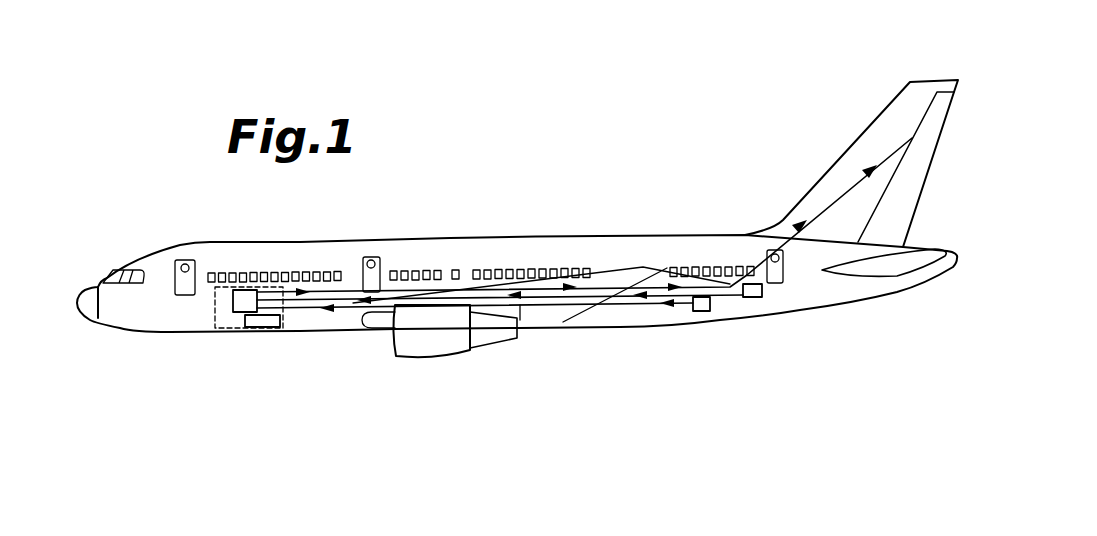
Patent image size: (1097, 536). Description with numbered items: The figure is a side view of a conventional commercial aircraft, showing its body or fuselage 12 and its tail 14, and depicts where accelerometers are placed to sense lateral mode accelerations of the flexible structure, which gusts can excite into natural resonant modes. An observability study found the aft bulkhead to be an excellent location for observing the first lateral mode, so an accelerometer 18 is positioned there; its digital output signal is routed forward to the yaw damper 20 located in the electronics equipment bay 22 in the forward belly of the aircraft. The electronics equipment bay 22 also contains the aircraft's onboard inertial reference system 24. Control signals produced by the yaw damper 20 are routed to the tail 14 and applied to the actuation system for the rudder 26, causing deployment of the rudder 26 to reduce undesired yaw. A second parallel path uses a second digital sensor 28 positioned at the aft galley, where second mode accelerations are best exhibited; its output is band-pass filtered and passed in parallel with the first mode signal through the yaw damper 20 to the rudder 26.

The fuselage 12 is at (330, 242).
The tail 14 is at (937, 82).
The accelerometer 18 is at (757, 297).
The yaw damper 20 is at (233, 298).
The electronics equipment bay 22 is at (263, 287).
The inertial reference system 24 is at (267, 327).
The rudder 26 is at (933, 117).
The second digital sensor 28 is at (700, 311).